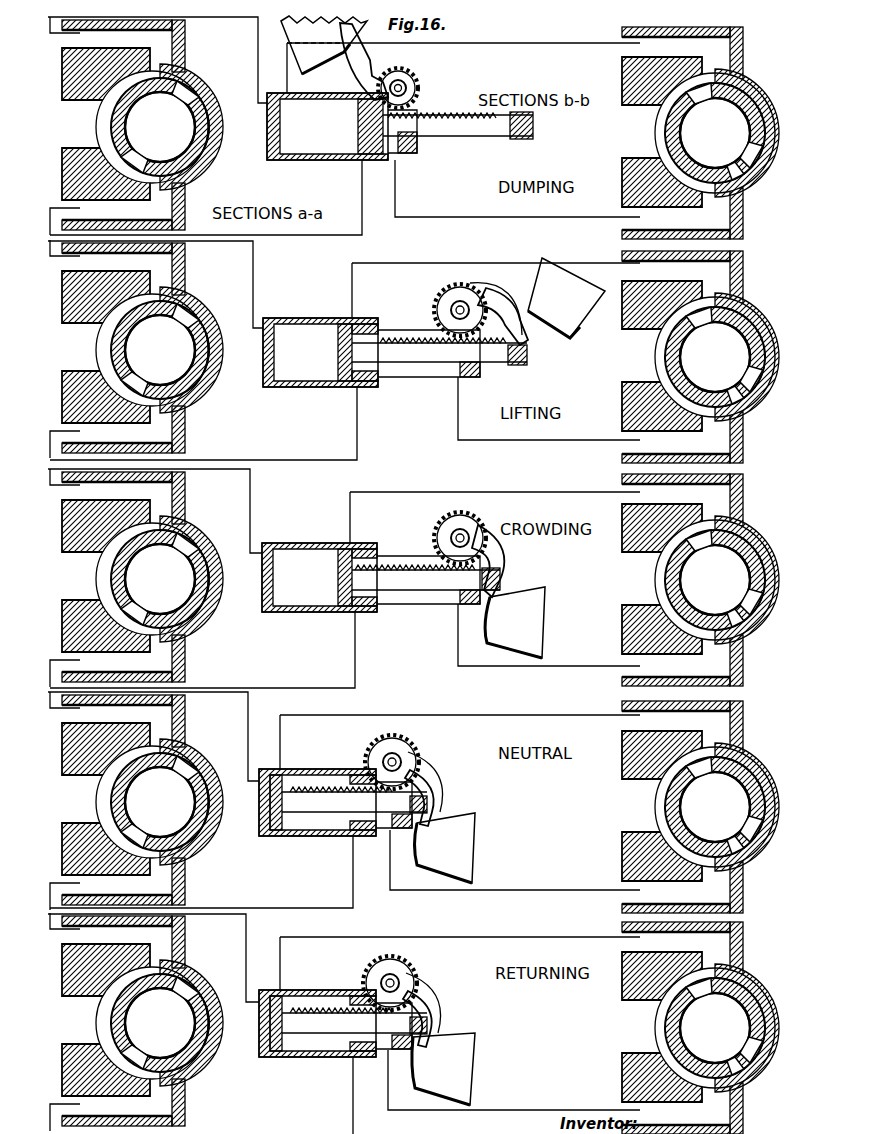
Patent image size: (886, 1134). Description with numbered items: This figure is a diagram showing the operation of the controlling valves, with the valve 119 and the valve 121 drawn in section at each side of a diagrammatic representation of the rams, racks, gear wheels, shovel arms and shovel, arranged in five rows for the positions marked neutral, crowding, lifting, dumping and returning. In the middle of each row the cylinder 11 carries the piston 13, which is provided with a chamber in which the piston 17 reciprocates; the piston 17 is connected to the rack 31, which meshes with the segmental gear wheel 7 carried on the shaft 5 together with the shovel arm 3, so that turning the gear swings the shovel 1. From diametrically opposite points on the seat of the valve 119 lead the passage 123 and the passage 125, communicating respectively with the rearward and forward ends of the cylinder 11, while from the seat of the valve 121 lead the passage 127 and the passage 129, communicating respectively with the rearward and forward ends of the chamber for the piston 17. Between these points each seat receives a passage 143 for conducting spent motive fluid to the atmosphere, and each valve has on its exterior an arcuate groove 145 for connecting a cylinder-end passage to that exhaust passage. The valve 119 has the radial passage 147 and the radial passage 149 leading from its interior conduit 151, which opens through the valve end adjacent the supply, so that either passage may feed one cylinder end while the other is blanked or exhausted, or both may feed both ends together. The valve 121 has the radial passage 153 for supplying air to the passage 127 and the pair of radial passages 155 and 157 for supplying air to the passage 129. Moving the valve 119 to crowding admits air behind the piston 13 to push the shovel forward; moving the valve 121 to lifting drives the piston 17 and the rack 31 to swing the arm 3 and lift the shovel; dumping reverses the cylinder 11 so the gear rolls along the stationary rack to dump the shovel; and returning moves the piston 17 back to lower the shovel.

The shovel 1 is at (290, 49).
The shovel arms 3 is at (360, 65).
The shaft 5 is at (402, 84).
The segmental gear wheels 7 is at (421, 82).
The cylinder 11 is at (311, 94).
The piston 13 is at (310, 1078).
The piston 17 is at (372, 126).
The racks 31 is at (436, 118).
The valve 119 is at (200, 160).
The valve 121 is at (745, 72).
The passage 123 is at (106, 512).
The passage 125 is at (106, 632).
The passage 127 is at (662, 517).
The passage 129 is at (662, 640).
The passages 143 is at (657, 1015).
The arcuate groove 145 is at (180, 64).
The radial passage 147 is at (180, 158).
The radial passage 149 is at (160, 92).
The interior conduit 151 is at (202, 140).
The radial passage 153 is at (715, 88).
The radial passage 155 is at (748, 190).
The radial passage 157 is at (755, 175).